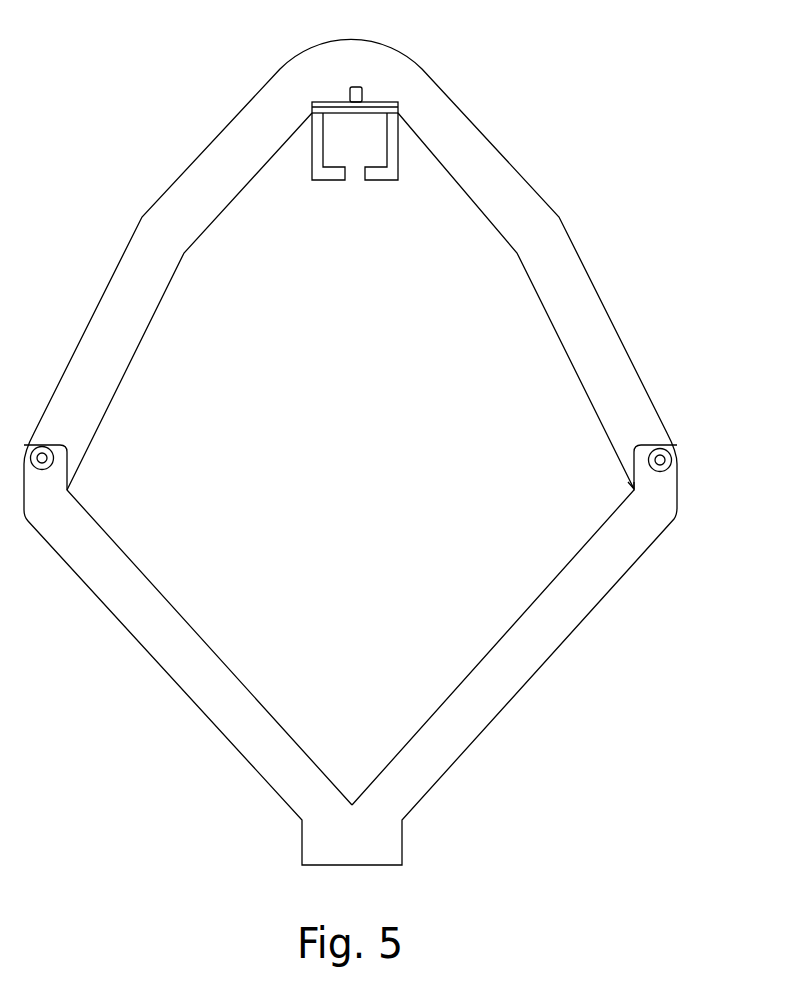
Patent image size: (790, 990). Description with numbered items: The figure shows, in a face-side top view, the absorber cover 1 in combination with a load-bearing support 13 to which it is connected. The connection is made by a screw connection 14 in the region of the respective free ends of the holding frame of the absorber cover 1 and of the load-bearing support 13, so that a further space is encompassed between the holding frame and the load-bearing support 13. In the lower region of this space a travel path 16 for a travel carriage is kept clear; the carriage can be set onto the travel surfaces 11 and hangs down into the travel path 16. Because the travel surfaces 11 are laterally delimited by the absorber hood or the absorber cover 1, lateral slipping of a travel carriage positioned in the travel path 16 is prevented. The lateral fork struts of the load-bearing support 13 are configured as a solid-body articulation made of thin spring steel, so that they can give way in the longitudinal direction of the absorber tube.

The absorber cover 1 is at (577, 276).
The travel surfaces 11 is at (633, 488).
The load-bearing support 13 is at (530, 662).
The screw connection 14 is at (684, 452).
The travel path 16 is at (160, 652).